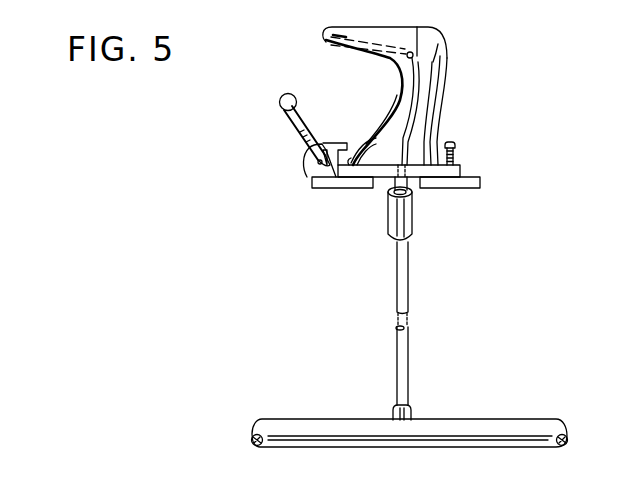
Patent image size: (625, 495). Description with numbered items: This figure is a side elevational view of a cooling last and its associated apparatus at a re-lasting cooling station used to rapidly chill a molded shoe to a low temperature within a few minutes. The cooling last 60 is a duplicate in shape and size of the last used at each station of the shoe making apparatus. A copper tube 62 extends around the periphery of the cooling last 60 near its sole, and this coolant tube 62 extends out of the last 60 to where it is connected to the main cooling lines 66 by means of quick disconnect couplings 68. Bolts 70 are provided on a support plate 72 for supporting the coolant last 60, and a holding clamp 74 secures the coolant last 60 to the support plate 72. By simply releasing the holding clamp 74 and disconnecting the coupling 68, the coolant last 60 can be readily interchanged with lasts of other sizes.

The cooling last 60 is at (435, 97).
The copper tube 62 is at (413, 84).
The main cooling lines 66 is at (310, 424).
The quick disconnect couplings 68 is at (395, 222).
The bolts 70 is at (457, 148).
The support plate 72 is at (462, 181).
The holding clamp 74 is at (297, 158).